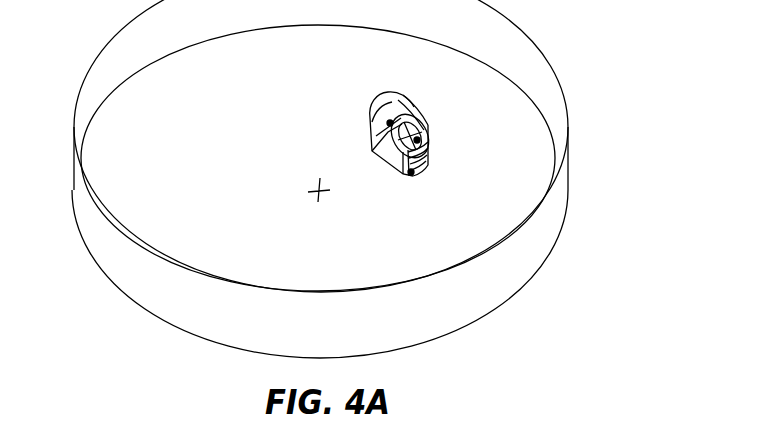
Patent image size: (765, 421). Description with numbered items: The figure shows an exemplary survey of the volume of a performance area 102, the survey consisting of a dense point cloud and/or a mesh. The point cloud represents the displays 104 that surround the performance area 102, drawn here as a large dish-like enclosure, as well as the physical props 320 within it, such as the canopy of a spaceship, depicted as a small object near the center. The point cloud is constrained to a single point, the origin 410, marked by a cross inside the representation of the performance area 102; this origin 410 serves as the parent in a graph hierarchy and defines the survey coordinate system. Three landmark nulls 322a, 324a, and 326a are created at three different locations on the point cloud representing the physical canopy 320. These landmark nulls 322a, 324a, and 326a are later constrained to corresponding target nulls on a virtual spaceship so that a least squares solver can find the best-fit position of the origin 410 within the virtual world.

The performance area 102 is at (150, 203).
The displays 104 is at (543, 214).
The physical prop 320 is at (384, 93).
The landmark null 322a is at (390, 123).
The landmark null 324a is at (411, 172).
The landmark null 326a is at (417, 140).
The origin 410 is at (365, 251).